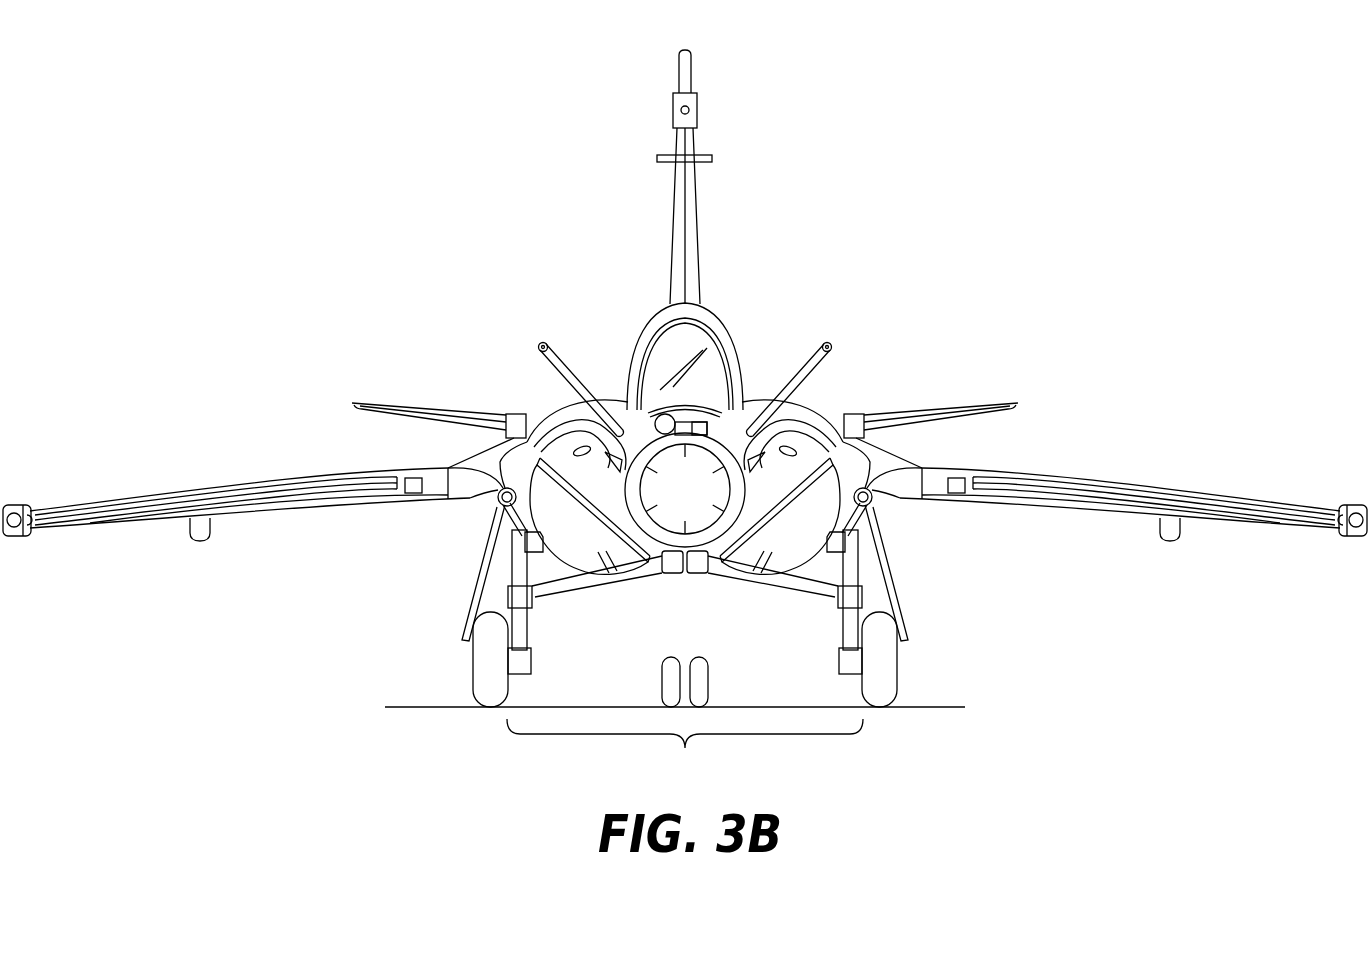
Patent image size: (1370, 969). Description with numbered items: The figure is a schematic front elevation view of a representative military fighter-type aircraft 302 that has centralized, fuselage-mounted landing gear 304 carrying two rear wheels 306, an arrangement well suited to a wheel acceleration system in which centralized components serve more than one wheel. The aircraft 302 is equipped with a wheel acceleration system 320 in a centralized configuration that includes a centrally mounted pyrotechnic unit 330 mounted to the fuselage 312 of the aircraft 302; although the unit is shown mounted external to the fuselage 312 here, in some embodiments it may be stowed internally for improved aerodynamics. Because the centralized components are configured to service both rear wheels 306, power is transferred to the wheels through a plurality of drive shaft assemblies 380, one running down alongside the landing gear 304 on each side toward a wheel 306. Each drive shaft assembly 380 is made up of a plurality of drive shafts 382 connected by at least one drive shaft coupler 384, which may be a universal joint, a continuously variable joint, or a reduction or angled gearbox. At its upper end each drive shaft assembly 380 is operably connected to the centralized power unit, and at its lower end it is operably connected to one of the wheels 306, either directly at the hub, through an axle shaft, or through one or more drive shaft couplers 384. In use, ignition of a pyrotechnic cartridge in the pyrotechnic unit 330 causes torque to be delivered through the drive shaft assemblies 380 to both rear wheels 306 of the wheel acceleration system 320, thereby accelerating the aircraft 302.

The aircraft 302 is at (561, 282).
The landing gear 304 is at (513, 568).
The rear wheels 306 is at (473, 667).
The fuselage 312 is at (512, 530).
The wheel acceleration system 320 is at (880, 781).
The pyrotechnic unit 330 is at (683, 575).
The drive shaft assembly 380 is at (490, 593).
The drive shaft 382 is at (527, 624).
The drive shaft coupler 384 is at (532, 667).